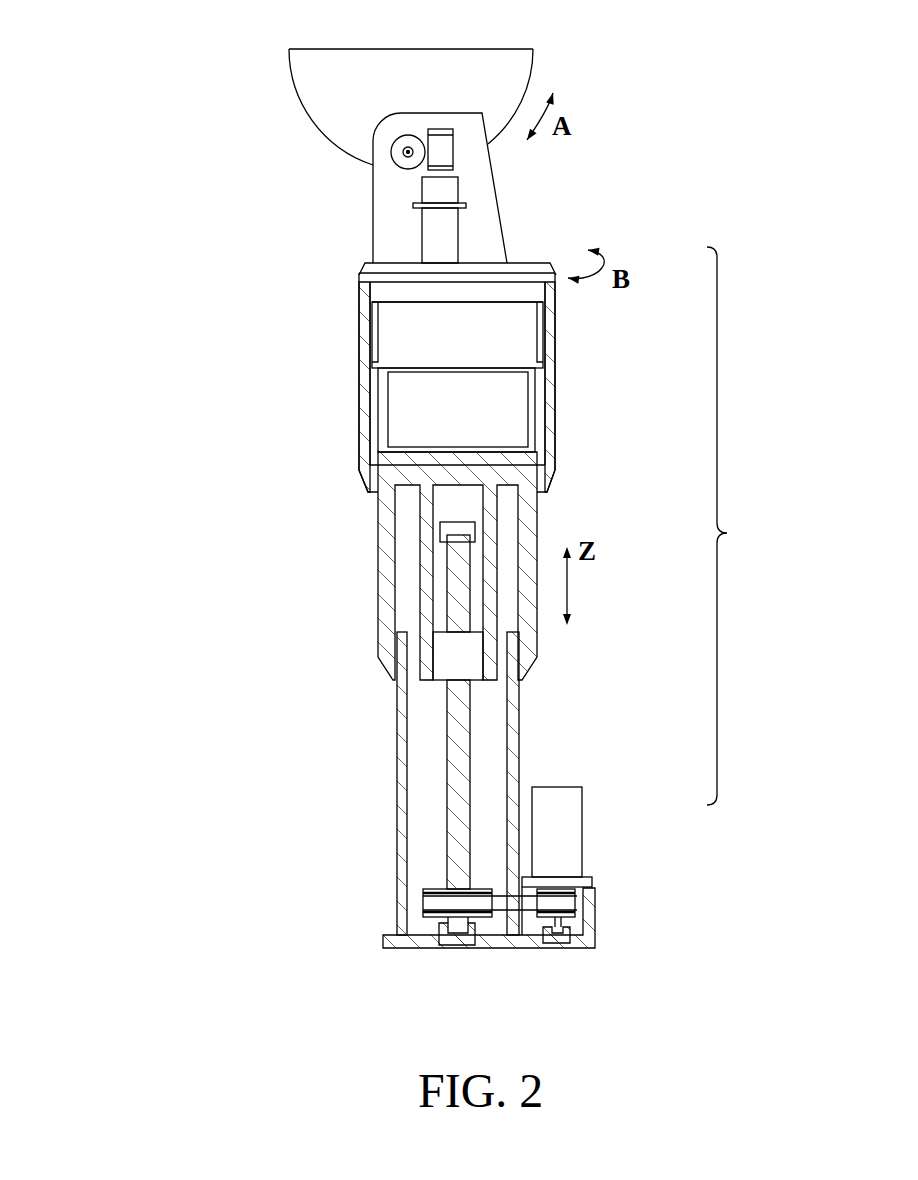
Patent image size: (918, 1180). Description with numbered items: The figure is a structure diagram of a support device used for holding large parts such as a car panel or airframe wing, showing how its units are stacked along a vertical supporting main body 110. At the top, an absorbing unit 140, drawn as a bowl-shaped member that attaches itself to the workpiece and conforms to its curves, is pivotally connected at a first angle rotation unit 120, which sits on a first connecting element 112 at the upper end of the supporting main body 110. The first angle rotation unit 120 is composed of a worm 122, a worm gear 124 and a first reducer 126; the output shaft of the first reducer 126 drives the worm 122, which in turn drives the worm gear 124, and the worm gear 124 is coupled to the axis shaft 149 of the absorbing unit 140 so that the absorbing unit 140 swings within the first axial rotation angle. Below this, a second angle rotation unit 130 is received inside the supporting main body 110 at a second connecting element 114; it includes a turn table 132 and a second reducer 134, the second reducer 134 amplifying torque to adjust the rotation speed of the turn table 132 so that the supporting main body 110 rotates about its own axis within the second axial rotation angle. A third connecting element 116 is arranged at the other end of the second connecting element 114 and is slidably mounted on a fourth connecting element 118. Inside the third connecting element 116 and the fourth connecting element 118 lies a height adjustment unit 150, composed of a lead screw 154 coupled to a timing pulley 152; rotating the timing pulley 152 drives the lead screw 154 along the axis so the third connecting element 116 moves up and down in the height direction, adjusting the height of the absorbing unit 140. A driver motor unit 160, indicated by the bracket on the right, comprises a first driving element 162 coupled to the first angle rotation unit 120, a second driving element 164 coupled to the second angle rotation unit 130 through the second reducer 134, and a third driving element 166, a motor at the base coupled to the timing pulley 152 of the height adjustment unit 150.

The supporting main body 110 is at (228, 486).
The first connecting element 112 is at (385, 203).
The second connecting element 114 is at (372, 435).
The third connecting element 116 is at (388, 528).
The fourth connecting element 118 is at (400, 702).
The first angle rotation unit 120 is at (607, 177).
The worm 122 is at (442, 152).
The worm gear 124 is at (408, 152).
The first reducer 126 is at (442, 193).
The second angle rotation unit 130 is at (272, 318).
The turn table 132 is at (382, 291).
The second reducer 134 is at (395, 338).
The absorbing unit 140 is at (503, 62).
The axis shaft 149 is at (396, 140).
The height adjustment unit 150 is at (302, 826).
The timing pulley 152 is at (440, 904).
The lead screw 154 is at (458, 778).
The driver motor unit 160 is at (577, 571).
The first driving element 162 is at (443, 240).
The second driving element 164 is at (505, 407).
The third driving element 166 is at (565, 830).